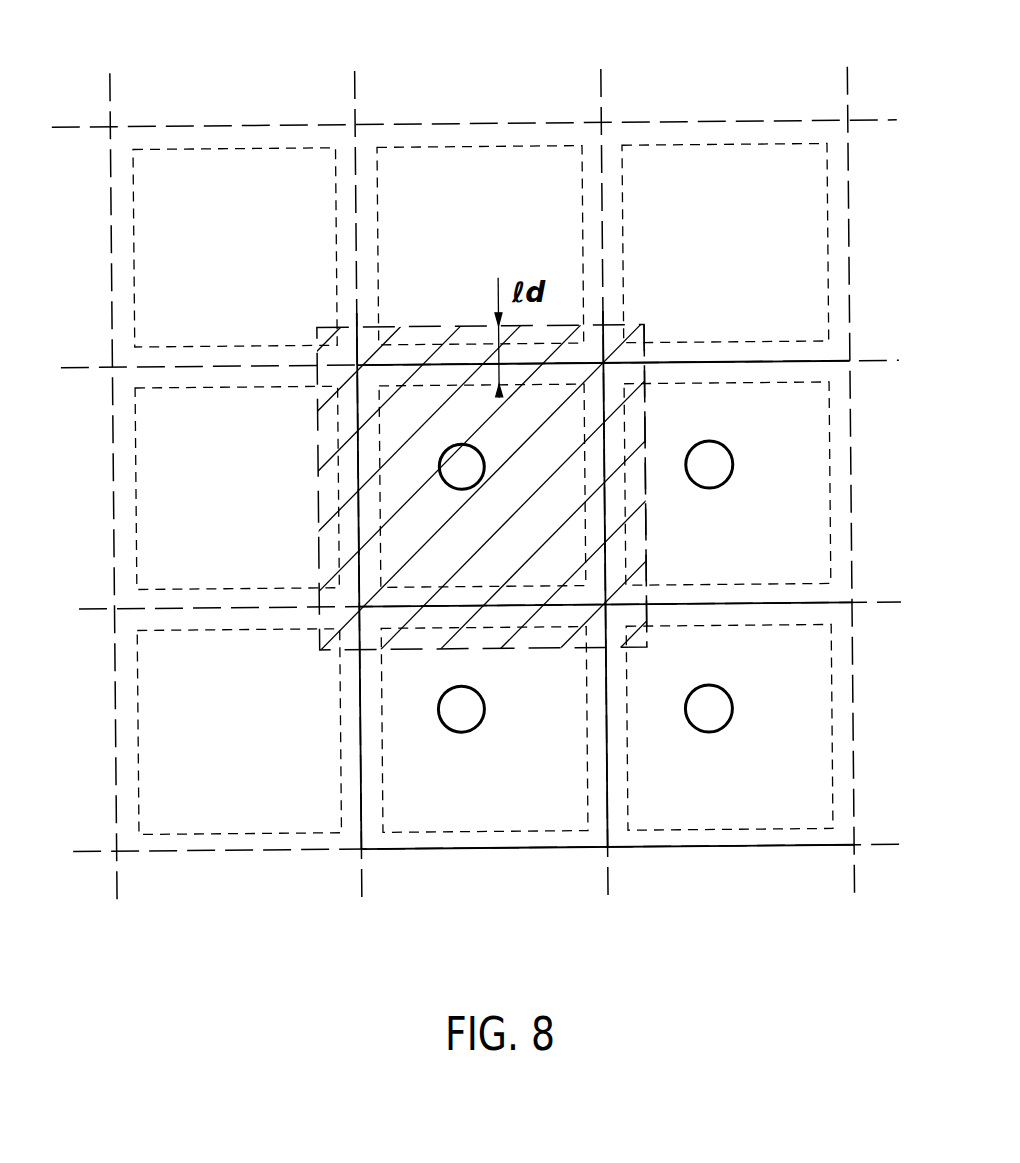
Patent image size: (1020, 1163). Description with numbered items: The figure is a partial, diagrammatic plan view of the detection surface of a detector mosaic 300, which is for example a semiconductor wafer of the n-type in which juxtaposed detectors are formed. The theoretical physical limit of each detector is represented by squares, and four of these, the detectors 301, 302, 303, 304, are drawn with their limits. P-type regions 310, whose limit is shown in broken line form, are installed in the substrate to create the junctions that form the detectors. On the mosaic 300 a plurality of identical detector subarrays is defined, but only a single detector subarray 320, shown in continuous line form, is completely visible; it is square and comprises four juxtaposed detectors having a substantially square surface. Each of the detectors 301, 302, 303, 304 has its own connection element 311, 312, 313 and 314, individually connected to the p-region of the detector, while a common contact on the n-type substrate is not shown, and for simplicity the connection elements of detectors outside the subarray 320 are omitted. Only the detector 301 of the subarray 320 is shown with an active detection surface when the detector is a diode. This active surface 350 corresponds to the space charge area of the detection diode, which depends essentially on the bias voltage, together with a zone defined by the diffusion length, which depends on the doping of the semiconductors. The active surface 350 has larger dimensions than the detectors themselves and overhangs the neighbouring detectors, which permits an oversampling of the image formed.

The detector mosaic 300 is at (298, 120).
The detector 301 is at (373, 606).
The detector 302 is at (117, 528).
The detector 303 is at (178, 133).
The detector 304 is at (487, 127).
The p-type region 310 is at (381, 311).
The connection element 311 is at (472, 477).
The connection element 312 is at (722, 452).
The connection element 313 is at (723, 718).
The connection element 314 is at (483, 722).
The detector subarray 320 is at (637, 851).
The active surface 350 is at (647, 528).